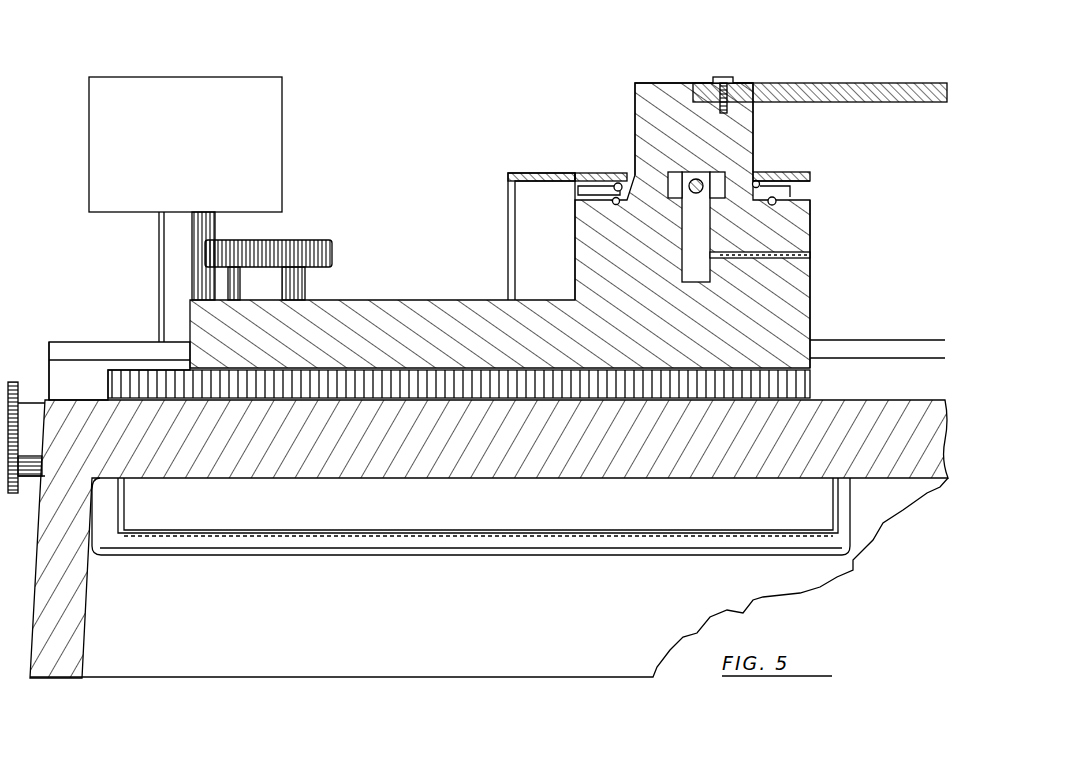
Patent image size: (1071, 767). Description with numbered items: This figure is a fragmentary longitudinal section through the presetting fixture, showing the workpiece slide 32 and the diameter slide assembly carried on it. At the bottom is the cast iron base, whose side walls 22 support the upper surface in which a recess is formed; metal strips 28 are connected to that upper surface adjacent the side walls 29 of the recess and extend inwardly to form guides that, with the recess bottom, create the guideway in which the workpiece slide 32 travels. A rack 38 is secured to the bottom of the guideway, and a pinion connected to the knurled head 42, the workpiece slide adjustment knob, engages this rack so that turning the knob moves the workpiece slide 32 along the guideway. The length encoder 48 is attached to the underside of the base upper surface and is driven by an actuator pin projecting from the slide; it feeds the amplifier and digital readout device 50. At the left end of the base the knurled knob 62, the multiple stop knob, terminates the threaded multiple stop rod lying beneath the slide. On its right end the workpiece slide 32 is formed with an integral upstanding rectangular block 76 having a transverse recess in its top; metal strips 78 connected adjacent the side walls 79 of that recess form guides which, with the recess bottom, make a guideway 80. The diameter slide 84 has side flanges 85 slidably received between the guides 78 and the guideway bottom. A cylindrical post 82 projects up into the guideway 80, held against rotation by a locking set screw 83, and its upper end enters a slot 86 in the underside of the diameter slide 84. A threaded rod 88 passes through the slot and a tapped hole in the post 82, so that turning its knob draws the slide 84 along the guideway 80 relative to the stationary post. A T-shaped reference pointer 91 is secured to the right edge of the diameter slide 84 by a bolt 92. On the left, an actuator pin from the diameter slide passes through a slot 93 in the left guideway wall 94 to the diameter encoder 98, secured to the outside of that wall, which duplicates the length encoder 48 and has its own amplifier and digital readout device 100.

The side walls 22 is at (38, 645).
The metal strips 28 is at (97, 340).
The side walls of recess 29 is at (60, 352).
The workpiece slide 32 is at (400, 238).
The rack 38 is at (120, 385).
The knurled head 42 is at (289, 240).
The length encoder 48 is at (264, 508).
The amplifier and digital readout device 50 is at (135, 85).
The knurled knob 62 is at (30, 395).
The rectangular block 76 is at (812, 210).
The metal strips 78 is at (585, 174).
The side walls of recess 79 is at (617, 183).
The guideway 80 is at (760, 178).
The cylindrical post 82 is at (686, 246).
The locking set screw 83 is at (812, 256).
The diameter slide 84 is at (635, 100).
The side flanges 85 is at (628, 178).
The slot 86 is at (672, 196).
The threaded rod 88 is at (692, 196).
The T-shaped reference pointer 91 is at (810, 86).
The bolt 92 is at (722, 77).
The slot 93 is at (573, 192).
The left guideway wall 94 is at (560, 172).
The diameter encoder 98 is at (518, 272).
The amplifier and digital readout device 100 is at (101, 183).